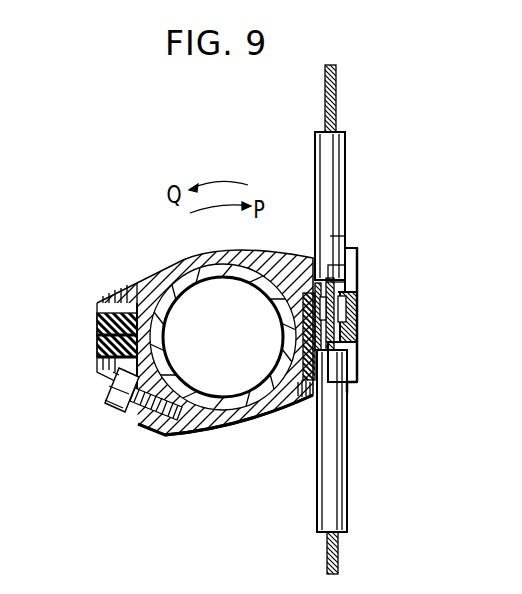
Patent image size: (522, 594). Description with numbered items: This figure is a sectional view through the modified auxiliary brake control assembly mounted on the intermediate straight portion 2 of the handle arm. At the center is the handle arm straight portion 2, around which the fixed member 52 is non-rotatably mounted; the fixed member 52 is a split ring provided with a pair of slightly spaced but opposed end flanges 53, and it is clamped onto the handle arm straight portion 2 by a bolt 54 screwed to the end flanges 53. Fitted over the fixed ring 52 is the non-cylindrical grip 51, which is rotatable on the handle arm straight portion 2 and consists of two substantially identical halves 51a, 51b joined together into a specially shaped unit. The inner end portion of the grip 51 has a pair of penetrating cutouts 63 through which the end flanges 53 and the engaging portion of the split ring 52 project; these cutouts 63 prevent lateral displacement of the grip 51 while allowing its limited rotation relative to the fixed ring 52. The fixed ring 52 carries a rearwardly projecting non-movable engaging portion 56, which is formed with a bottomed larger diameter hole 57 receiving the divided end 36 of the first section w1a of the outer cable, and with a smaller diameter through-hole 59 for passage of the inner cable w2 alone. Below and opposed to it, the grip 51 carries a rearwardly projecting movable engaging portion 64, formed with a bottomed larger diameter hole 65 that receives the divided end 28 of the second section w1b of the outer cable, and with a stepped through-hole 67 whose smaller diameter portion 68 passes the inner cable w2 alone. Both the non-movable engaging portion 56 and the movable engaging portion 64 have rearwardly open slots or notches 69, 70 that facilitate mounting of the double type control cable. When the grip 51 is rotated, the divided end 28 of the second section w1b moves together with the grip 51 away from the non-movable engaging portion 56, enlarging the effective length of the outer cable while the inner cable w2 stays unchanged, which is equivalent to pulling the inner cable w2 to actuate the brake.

The handle arm straight portion 2 is at (178, 285).
The divided end of outer cable second section 28 is at (362, 368).
The divided end of outer cable first section 36 is at (360, 272).
The grip 51 is at (117, 292).
The grip half 51a is at (135, 287).
The grip half 51b is at (293, 418).
The fixed member 52 is at (283, 257).
The end flanges 53 is at (136, 417).
The bolt 54 is at (110, 388).
The non-movable engaging portion 56 is at (358, 257).
The bottomed larger diameter hole 57 is at (343, 238).
The smaller diameter through-hole 59 is at (336, 268).
The penetrating cutouts 63 is at (98, 301).
The movable engaging portion 64 is at (365, 360).
The bottomed larger diameter hole 65 is at (335, 372).
The stepped through-hole 67 is at (361, 312).
The smaller diameter portion 68 is at (343, 395).
The rearwardly open slot 69 is at (361, 293).
The rearwardly open slot 70 is at (351, 345).
The first section of outer cable w1a is at (345, 153).
The second section of outer cable w1b is at (348, 502).
The inner cable w2 is at (337, 91).